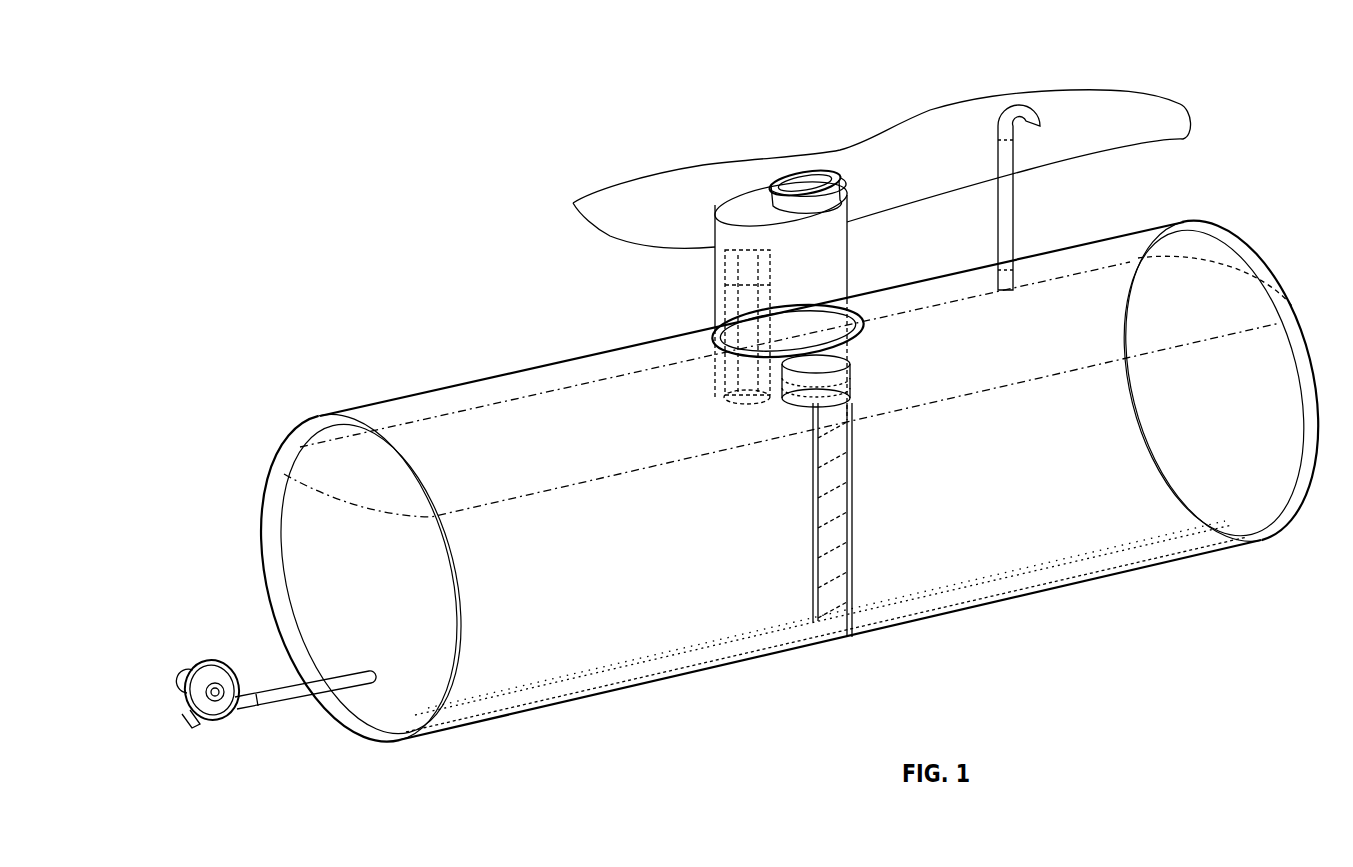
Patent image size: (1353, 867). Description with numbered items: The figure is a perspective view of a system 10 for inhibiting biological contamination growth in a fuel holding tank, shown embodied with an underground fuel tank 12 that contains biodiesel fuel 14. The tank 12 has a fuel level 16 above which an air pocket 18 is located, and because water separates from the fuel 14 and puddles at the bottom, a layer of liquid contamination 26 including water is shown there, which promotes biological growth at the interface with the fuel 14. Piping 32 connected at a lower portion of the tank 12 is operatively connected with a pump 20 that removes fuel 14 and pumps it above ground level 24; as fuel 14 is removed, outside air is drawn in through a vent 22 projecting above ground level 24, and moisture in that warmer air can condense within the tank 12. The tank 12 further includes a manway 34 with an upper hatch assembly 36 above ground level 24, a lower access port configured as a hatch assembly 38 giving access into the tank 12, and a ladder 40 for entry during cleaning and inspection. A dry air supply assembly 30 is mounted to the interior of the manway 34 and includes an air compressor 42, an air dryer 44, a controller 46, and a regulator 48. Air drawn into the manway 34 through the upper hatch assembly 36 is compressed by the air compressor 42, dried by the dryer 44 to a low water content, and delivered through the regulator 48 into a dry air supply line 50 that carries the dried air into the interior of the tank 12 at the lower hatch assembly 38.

The system for inhibiting biological contamination growth in a fuel holding tank 10 is at (656, 269).
The underground fuel tank 12 is at (827, 650).
The biodiesel fuel 14 is at (302, 538).
The fuel level 16 is at (940, 403).
The air pocket 18 is at (330, 451).
The pump 20 is at (213, 735).
The vent 22 is at (998, 105).
The ground level 24 is at (674, 167).
The layer of liquid contamination 26 is at (612, 670).
The dry air supply assembly 30 is at (733, 362).
The piping 32 is at (285, 708).
The manway 34 is at (855, 252).
The upper hatch assembly 36 is at (800, 176).
The lower hatch assembly 38 is at (862, 350).
The ladder 40 is at (855, 515).
The air compressor 42 is at (772, 260).
The air dryer 44 is at (772, 298).
The controller 46 is at (712, 390).
The regulator 48 is at (780, 328).
The dry air supply line 50 is at (772, 410).